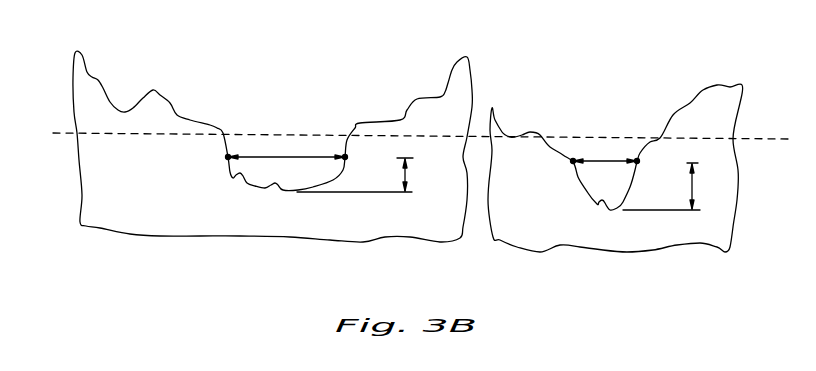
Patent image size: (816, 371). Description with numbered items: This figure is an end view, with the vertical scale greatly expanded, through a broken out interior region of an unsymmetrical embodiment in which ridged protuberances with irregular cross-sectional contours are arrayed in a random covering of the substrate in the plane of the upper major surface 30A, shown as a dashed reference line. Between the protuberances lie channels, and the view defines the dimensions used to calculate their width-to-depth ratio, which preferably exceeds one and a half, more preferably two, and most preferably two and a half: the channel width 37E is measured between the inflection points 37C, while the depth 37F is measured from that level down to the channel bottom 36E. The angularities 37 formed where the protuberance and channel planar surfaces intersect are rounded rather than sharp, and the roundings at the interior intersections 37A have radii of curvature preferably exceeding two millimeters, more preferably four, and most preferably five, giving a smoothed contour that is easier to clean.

The upper major surface 30A is at (765, 139).
The angularities 37 is at (218, 130).
The interior intersections 37A is at (122, 110).
The inflection points 37C is at (429, 165).
The channel width 37E is at (311, 157).
The depth 37F is at (412, 175).
The channel bottom 36E is at (268, 187).